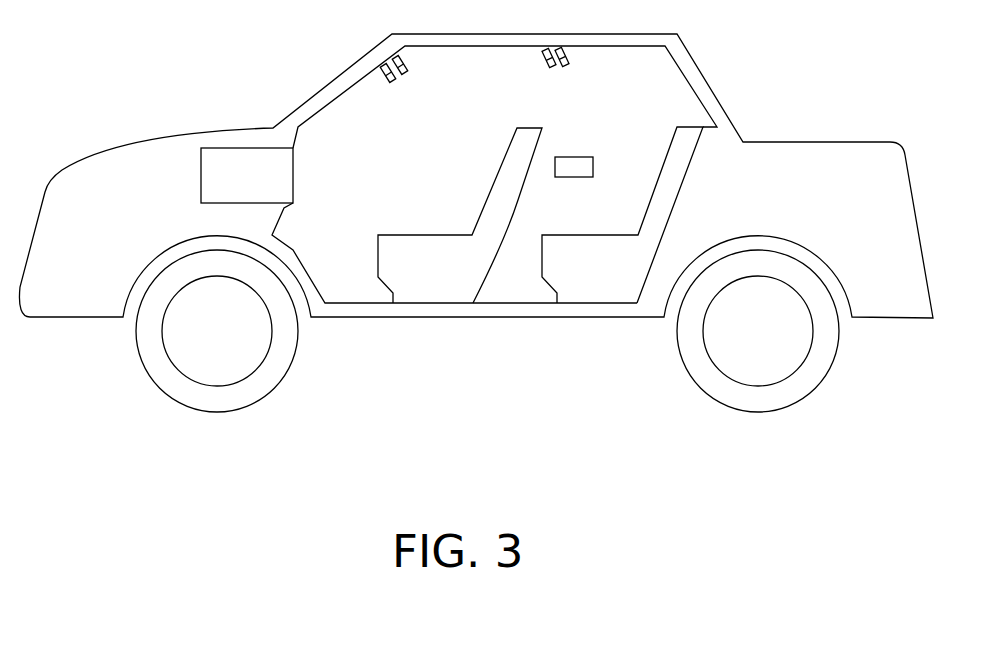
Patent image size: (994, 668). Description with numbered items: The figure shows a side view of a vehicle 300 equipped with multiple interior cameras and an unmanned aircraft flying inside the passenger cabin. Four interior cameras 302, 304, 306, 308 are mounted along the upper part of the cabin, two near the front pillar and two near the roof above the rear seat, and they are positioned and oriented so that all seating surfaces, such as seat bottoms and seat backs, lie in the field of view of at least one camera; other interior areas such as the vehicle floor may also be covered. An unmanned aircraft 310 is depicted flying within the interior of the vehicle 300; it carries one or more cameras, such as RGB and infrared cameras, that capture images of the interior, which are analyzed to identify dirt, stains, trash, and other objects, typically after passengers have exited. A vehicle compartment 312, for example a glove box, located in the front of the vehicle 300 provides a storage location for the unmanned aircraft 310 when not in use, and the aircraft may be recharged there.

The vehicle 300 is at (176, 140).
The interior camera 302 is at (385, 72).
The interior camera 304 is at (402, 56).
The interior camera 306 is at (545, 56).
The interior camera 308 is at (572, 53).
The unmanned aircraft 310 is at (582, 157).
The vehicle compartment 312 is at (257, 148).